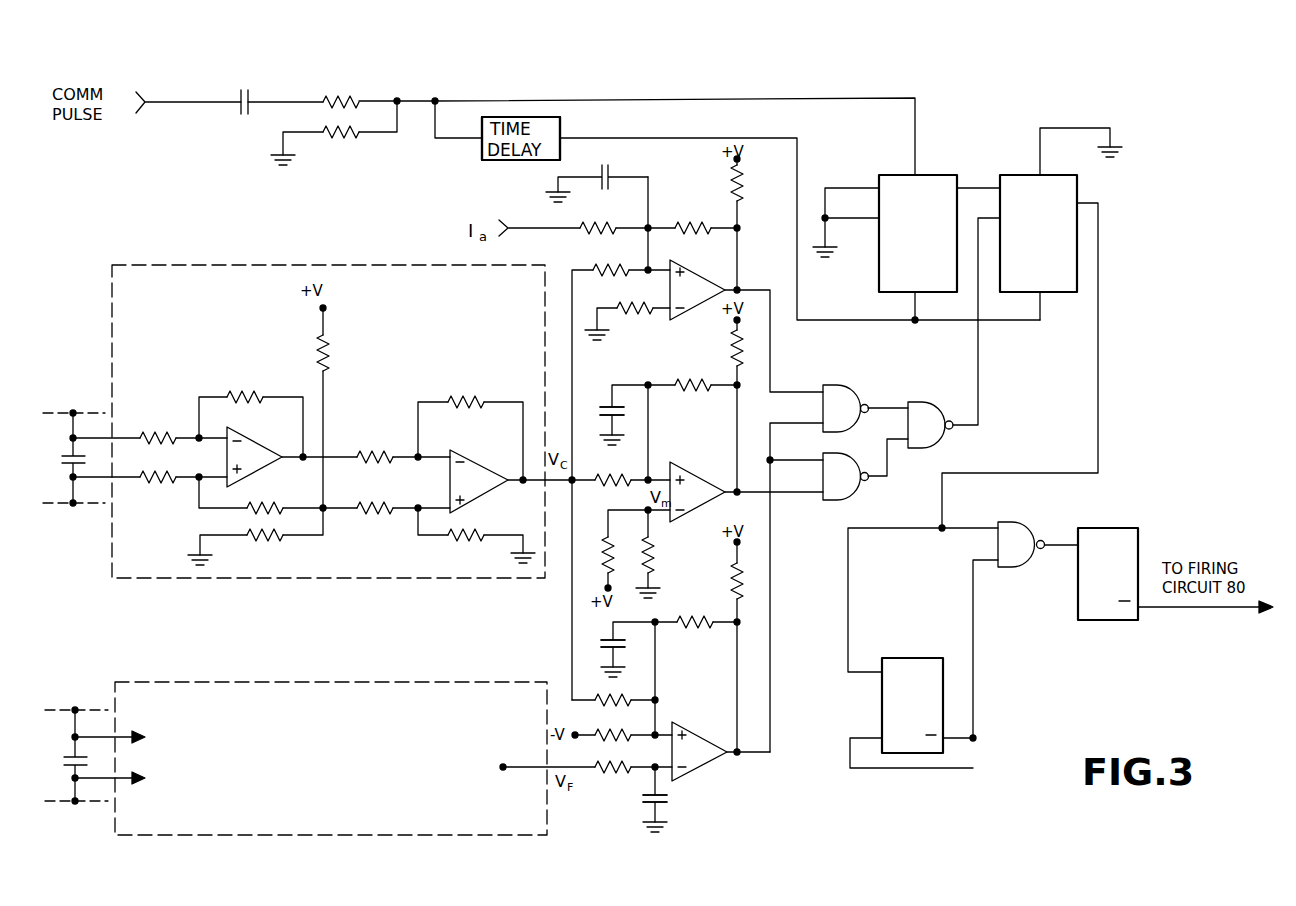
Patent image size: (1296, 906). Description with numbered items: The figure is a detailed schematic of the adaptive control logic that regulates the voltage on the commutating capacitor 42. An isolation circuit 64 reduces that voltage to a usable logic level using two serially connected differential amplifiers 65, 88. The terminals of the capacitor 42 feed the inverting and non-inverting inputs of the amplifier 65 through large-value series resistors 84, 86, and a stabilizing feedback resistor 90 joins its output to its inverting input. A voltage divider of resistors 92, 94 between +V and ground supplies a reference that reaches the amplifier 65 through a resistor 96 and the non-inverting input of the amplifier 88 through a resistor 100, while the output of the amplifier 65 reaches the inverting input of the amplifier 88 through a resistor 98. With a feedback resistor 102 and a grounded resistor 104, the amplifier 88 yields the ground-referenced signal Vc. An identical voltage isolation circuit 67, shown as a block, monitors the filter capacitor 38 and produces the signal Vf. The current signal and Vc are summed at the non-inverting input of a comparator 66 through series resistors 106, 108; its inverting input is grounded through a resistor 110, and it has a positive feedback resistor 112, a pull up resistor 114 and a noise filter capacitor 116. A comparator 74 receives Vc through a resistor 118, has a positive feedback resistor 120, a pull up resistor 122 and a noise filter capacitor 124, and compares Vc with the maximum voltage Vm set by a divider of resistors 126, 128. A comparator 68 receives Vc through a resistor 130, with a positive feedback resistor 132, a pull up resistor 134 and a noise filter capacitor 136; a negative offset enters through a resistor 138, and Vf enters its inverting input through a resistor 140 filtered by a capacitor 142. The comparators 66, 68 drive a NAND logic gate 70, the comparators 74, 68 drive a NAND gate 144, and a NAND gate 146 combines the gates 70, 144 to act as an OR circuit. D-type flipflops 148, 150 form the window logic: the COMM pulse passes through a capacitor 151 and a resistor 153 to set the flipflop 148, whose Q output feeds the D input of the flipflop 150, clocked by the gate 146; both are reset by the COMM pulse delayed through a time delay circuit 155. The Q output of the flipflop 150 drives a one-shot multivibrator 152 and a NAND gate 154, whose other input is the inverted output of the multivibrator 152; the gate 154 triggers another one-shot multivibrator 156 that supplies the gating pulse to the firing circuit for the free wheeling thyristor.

The filter capacitor 38 is at (64, 760).
The capacitor 42 is at (67, 459).
The isolation circuit 64 is at (327, 264).
The differential amplifier 65 is at (271, 440).
The comparator 66 is at (706, 270).
The voltage isolation circuit 67 is at (278, 739).
The comparator 68 is at (715, 734).
The logic gate 70 is at (845, 388).
The comparator 74 is at (710, 478).
The series resistor 84 is at (159, 426).
The series resistor 86 is at (164, 492).
The differential amplifier 88 is at (495, 461).
The stabilizing feedback resistor 90 is at (259, 384).
The resistor 92 is at (332, 360).
The resistor 94 is at (268, 540).
The resistor 96 is at (270, 500).
The resistor 98 is at (377, 439).
The resistor 100 is at (372, 500).
The feedback resistor 102 is at (469, 391).
The resistor 104 is at (478, 554).
The series resistor 106 is at (629, 211).
The series resistor 108 is at (587, 253).
The resistor 110 is at (641, 323).
The series resistor 112 is at (713, 215).
The pull up resistor 114 is at (744, 186).
The noise filter capacitor 116 is at (610, 170).
The resistor 118 is at (601, 501).
The positive feedback resistor 120 is at (704, 398).
The pull up resistor 122 is at (731, 354).
The noise filter capacitor 124 is at (590, 411).
The resistor 126 is at (631, 542).
The resistor 128 is at (660, 551).
The resistor 130 is at (622, 695).
The positive feedback resistor 132 is at (698, 639).
The pull up resistor 134 is at (728, 572).
The noise filter capacitor 136 is at (601, 642).
The resistor 138 is at (594, 724).
The series connected resistor 140 is at (620, 784).
The noise filter capacitor 142 is at (667, 800).
The NAND gate 144 is at (854, 500).
The NAND gate 146 is at (936, 402).
The flipflop 148 is at (945, 171).
The flipflop 150 is at (1018, 170).
The capacitor 151 is at (238, 108).
The monostable multivibrator 152 is at (918, 658).
The resistor 153 is at (324, 91).
The NAND gate 154 is at (1024, 522).
The time delay circuit 155 is at (480, 153).
The one-shot multivibrator 156 is at (1122, 528).